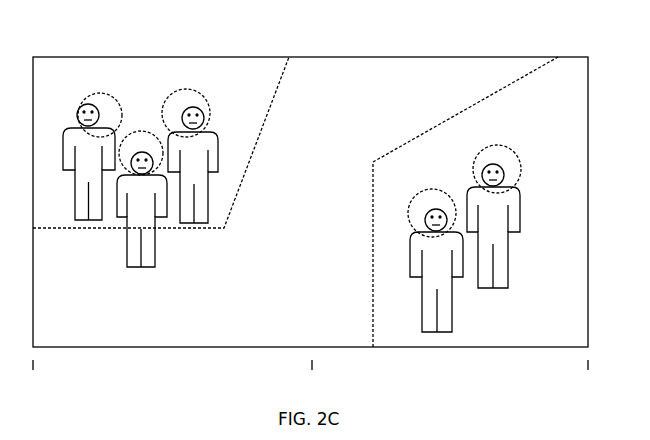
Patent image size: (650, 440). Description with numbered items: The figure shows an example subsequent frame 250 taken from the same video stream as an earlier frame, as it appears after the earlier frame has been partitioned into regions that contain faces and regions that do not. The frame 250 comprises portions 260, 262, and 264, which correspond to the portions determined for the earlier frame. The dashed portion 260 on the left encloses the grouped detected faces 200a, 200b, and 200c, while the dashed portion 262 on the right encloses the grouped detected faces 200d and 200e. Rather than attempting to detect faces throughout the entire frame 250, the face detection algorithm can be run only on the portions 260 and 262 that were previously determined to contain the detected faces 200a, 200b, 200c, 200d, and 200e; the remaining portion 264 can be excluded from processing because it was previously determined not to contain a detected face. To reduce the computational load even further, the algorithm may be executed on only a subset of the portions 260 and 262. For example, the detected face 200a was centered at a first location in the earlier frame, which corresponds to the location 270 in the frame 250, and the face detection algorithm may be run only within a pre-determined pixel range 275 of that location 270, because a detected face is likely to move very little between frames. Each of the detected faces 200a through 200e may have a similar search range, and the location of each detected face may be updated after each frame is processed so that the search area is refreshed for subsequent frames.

The subsequent frame 250 is at (386, 41).
The portion 260 is at (103, 63).
The portion 262 is at (569, 162).
The portion 264 is at (206, 306).
The detected face 200a is at (82, 108).
The detected face 200b is at (142, 152).
The detected face 200c is at (200, 109).
The detected face 200d is at (425, 211).
The detected face 200e is at (503, 170).
The location 270 is at (100, 117).
The pre-determined pixel range 275 is at (78, 114).